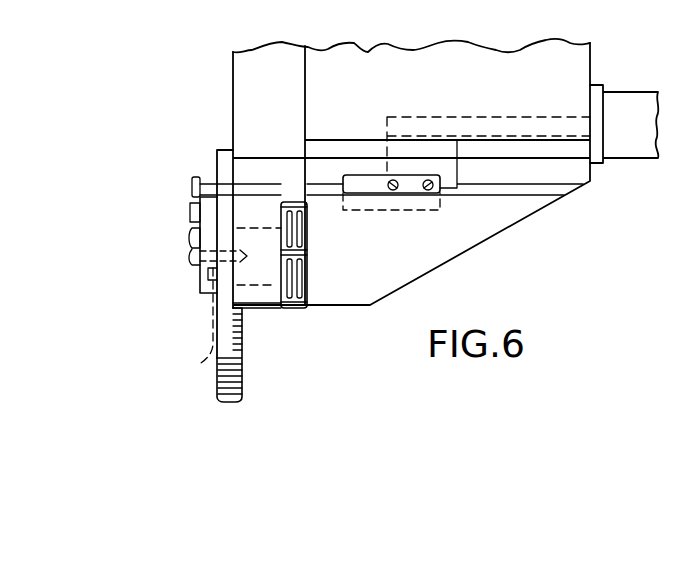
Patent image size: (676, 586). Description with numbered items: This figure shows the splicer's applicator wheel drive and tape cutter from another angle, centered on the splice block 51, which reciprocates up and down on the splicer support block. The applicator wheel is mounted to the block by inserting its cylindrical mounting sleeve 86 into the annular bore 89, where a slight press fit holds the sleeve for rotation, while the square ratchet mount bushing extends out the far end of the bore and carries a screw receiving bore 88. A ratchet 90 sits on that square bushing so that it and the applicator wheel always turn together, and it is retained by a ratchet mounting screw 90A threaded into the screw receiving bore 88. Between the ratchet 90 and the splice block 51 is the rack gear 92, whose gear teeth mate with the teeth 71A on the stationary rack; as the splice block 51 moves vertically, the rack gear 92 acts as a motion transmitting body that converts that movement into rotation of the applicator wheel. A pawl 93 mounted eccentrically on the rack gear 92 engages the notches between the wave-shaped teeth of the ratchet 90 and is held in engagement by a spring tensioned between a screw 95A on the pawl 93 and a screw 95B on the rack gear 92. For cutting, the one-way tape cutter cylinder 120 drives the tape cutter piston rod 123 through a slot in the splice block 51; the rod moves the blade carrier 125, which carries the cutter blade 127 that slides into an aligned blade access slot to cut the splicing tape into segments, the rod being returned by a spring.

The splice block 51 is at (360, 55).
The tape cutter cylinder 120 is at (620, 97).
The tape cutter piston rod 123 is at (562, 115).
The blade carrier 125 is at (439, 169).
The cutter blade 127 is at (413, 189).
The rack gear 92 is at (223, 150).
The screw 95B is at (192, 180).
The screw 95A is at (192, 242).
The ratchet mounting screw 90A is at (200, 261).
The pawl 93 is at (201, 282).
The ratchet 90 is at (201, 295).
The screw receiving bore 88 is at (212, 351).
The cylindrical mounting sleeve 86 is at (270, 250).
The annular bore 89 is at (268, 287).
The teeth on rack 71A is at (243, 386).